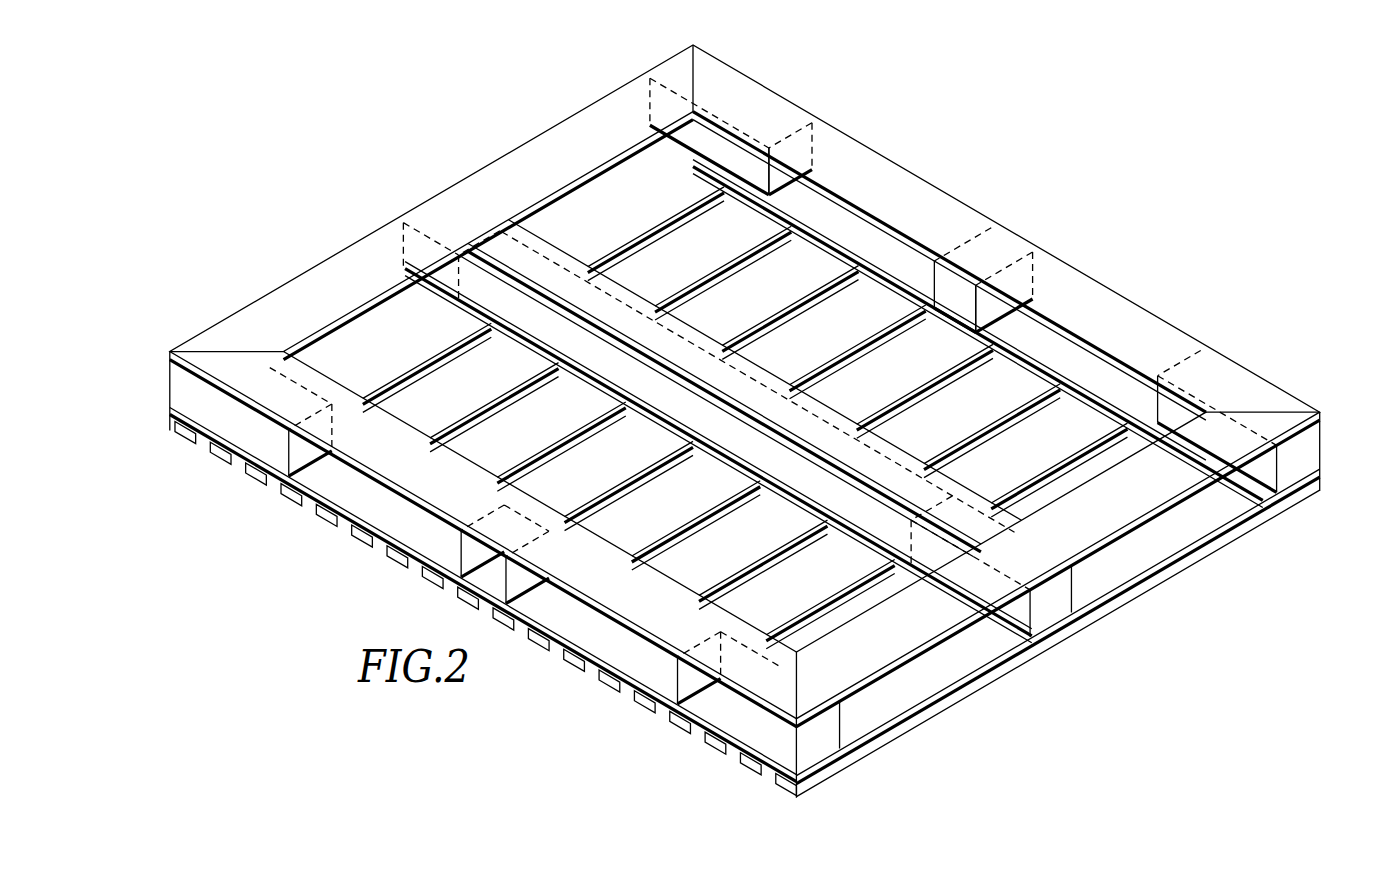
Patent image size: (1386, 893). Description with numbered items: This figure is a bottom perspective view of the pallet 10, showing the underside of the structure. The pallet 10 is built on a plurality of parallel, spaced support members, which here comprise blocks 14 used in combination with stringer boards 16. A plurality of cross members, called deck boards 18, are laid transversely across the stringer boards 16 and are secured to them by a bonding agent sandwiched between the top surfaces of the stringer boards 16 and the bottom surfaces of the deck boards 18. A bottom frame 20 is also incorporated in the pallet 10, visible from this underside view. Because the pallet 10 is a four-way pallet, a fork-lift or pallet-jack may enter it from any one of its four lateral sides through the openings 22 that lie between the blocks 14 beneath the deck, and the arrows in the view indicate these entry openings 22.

The pallet 10 is at (365, 161).
The blocks 14 is at (186, 392).
The stringer boards 16 is at (370, 507).
The deck boards 18 is at (1168, 548).
The bottom frame 20 is at (935, 200).
The openings 22 is at (404, 538).